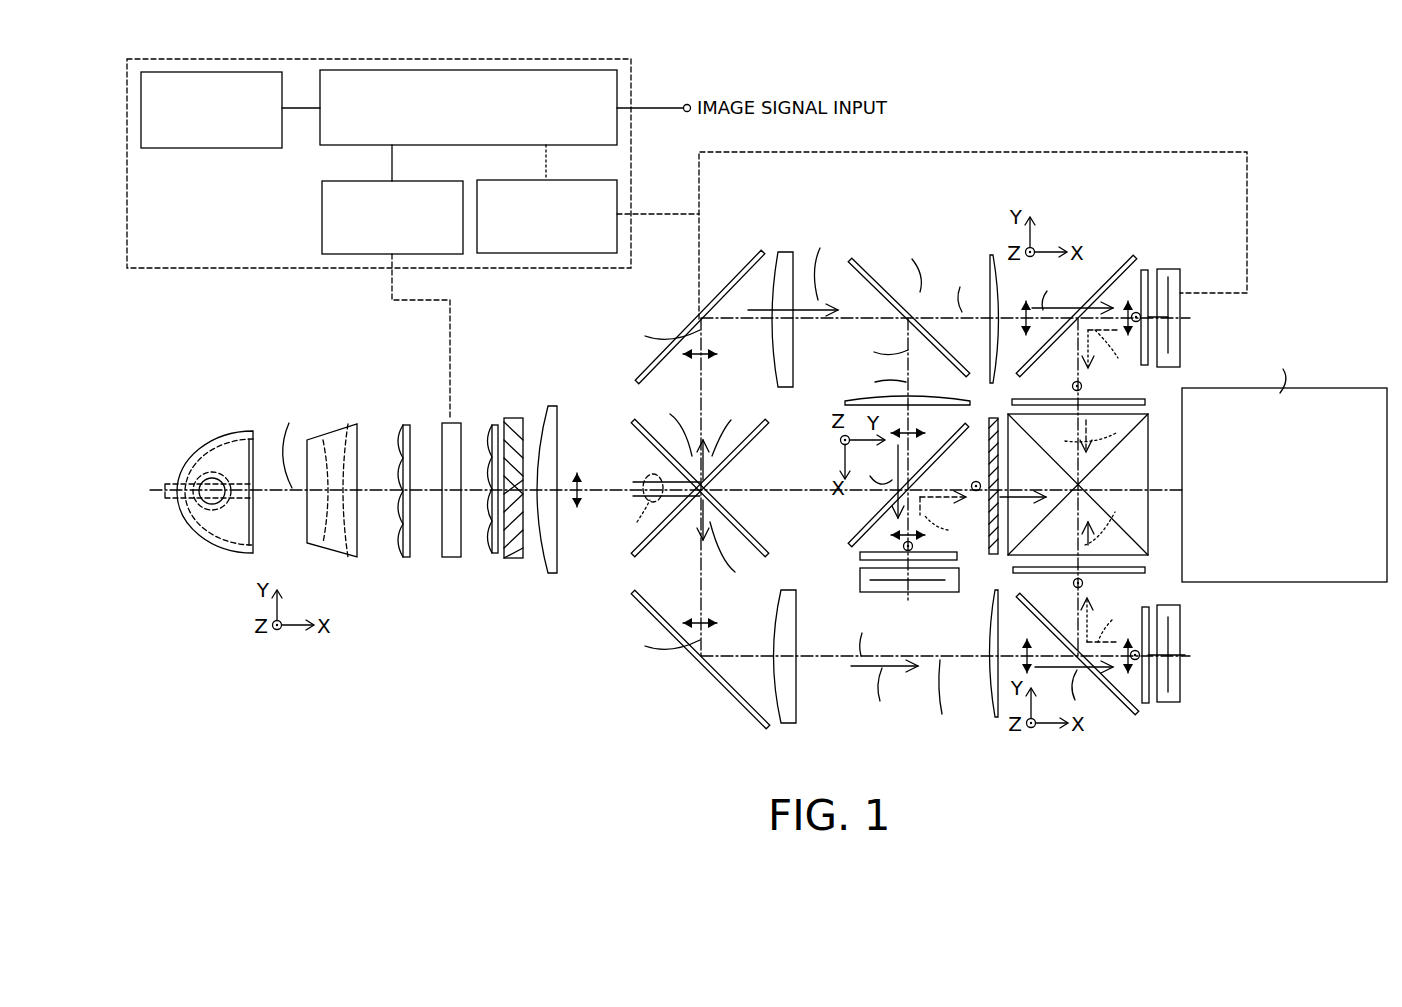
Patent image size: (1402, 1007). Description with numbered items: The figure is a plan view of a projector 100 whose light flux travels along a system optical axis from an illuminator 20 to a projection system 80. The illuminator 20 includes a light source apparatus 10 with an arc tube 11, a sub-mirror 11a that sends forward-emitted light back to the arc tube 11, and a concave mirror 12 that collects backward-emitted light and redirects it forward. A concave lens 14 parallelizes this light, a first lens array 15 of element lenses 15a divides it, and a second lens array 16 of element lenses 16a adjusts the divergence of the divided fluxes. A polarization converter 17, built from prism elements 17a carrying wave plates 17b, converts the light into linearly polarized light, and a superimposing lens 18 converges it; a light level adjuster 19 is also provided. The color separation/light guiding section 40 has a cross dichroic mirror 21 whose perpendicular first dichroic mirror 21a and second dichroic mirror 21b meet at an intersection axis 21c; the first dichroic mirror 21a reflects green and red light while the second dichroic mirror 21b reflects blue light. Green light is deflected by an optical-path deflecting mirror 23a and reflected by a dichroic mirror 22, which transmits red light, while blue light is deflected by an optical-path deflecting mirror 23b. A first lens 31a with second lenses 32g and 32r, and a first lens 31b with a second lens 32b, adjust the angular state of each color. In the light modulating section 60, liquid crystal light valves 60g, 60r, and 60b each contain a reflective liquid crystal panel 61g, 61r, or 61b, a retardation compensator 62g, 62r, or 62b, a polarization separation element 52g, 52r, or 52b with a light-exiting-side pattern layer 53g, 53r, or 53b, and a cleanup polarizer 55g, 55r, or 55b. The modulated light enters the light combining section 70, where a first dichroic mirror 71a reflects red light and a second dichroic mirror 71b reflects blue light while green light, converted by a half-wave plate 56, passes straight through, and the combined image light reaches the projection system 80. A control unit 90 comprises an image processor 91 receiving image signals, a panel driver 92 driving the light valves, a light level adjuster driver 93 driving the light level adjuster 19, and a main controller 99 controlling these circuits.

The projector 100 is at (1380, 66).
The control unit 90 is at (632, 72).
The main controller 99 is at (232, 72).
The image processor 91 is at (487, 70).
The panel driver 92 is at (568, 180).
The light level adjuster driver 93 is at (322, 219).
The light source apparatus 10 is at (192, 420).
The arc tube 11 is at (198, 502).
The sub-mirror 11a is at (213, 478).
The concave mirror 12 is at (206, 547).
The concave lens 14 is at (331, 538).
The first lens array 15 is at (384, 526).
The element lenses 15a is at (400, 540).
The second lens array 16 is at (483, 526).
The element lenses 16a is at (492, 545).
The polarization converter 17 is at (533, 479).
The prism elements 17a is at (510, 418).
The wave plates 17b is at (524, 426).
The superimposing lens 18 is at (551, 574).
The light level adjuster 19 is at (450, 560).
The illuminator 20 is at (400, 388).
The cross dichroic mirror 21 is at (670, 513).
The first dichroic mirror 21a is at (634, 553).
The second dichroic mirror 21b is at (632, 422).
The intersection axis 21c is at (706, 490).
The dichroic mirror 22 is at (881, 270).
The optical-path deflecting mirror 23a is at (750, 262).
The optical-path deflecting mirror 23b is at (722, 690).
The first lens 31a is at (790, 252).
The first lens 31b is at (790, 725).
The second lens 32r is at (990, 260).
The second lens 32g is at (845, 402).
The second lens 32b is at (995, 718).
The color separation/light guiding section 40 is at (638, 700).
The polarization separation element 52r is at (1097, 262).
The polarization separation element 52g is at (852, 540).
The polarization separation element 52b is at (1122, 702).
The light-exiting-side pattern layer 53r is at (1143, 270).
The light-exiting-side pattern layer 53g is at (852, 553).
The light-exiting-side pattern layer 53b is at (1032, 594).
The cleanup polarizer 55r is at (1062, 399).
The cleanup polarizer 55g is at (988, 432).
The cleanup polarizer 55b is at (1062, 574).
The half-wave plate 56 is at (962, 400).
The light modulating section 60 is at (1134, 735).
The liquid crystal light valve 60r is at (1122, 214).
The liquid crystal light valve 60g is at (843, 569).
The liquid crystal light valve 60b is at (1196, 696).
The liquid crystal panel 61r is at (1170, 268).
The liquid crystal panel 61g is at (905, 592).
The liquid crystal panel 61b is at (1170, 703).
The retardation compensator 62r is at (1152, 268).
The retardation compensator 62g is at (940, 580).
The retardation compensator 62b is at (1150, 704).
The light combining section 70 is at (1166, 574).
The first dichroic mirror 71a is at (1068, 462).
The second dichroic mirror 71b is at (1062, 520).
The projection system 80 is at (1290, 583).